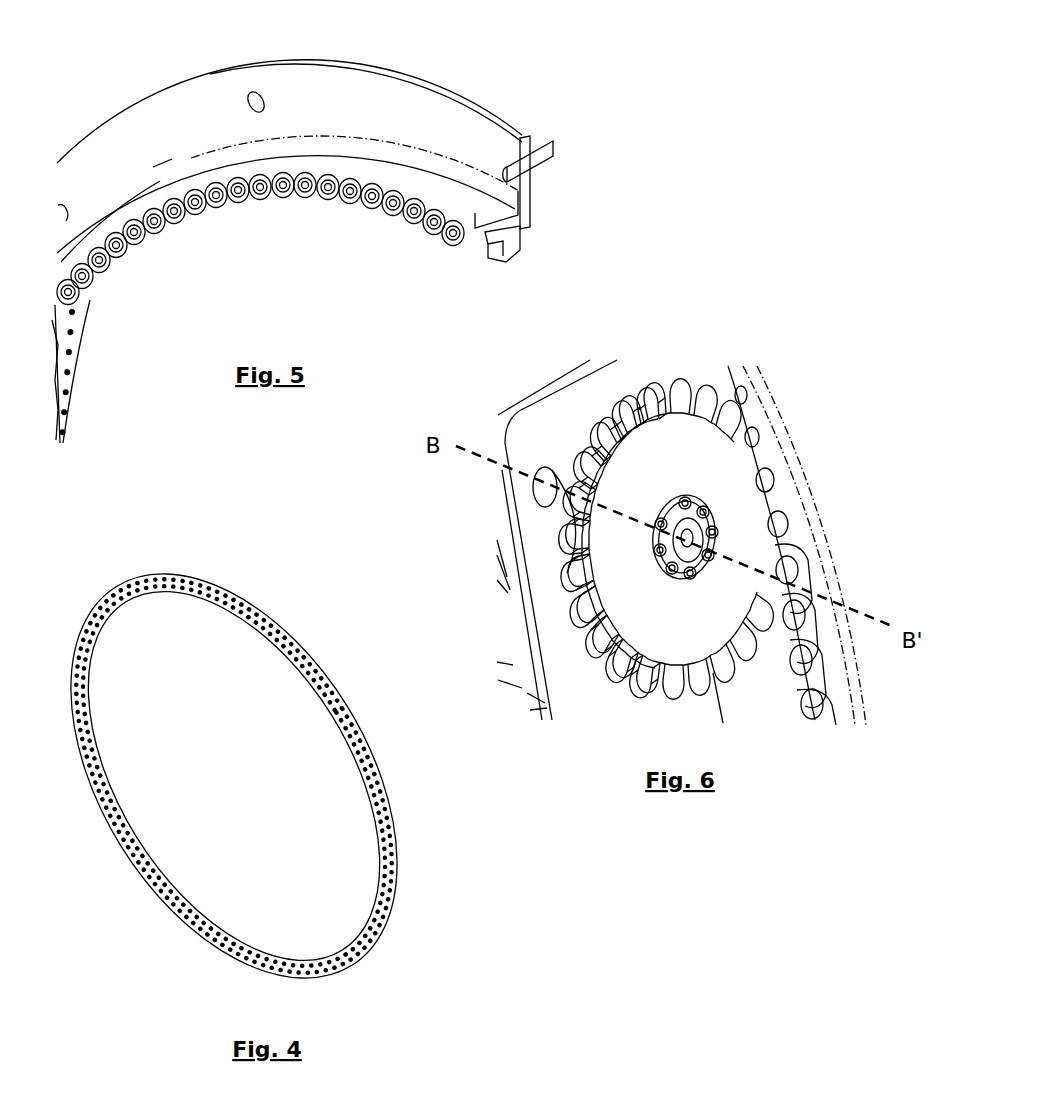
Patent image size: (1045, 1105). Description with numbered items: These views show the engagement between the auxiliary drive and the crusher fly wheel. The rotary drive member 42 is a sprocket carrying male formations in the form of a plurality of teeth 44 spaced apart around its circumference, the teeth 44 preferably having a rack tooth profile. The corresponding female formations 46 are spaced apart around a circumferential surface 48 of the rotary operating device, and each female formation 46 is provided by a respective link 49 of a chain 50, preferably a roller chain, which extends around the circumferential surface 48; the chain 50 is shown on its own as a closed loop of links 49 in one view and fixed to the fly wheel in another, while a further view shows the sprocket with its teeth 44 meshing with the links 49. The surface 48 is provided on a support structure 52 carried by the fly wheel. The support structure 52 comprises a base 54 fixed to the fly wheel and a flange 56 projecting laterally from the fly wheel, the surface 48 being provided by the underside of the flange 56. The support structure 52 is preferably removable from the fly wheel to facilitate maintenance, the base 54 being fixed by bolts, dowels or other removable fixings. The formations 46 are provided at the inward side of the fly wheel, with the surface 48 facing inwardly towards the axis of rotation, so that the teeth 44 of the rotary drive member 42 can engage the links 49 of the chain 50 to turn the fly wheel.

In FIG. 6, the rotary drive member 42 is at (644, 443).
In FIG. 6, the teeth 44 is at (642, 689).
In FIG. 5, the female formations 46 is at (68, 333).
In FIG. 6, the female formations 46 is at (806, 689).
In FIG. 5, the circumferential surface 48 is at (485, 238).
In FIG. 5, the link 49 is at (127, 230).
In FIG. 6, the link 49 is at (757, 428).
In FIG. 4, the link 49 is at (360, 742).
In FIG. 5, the chain 50 is at (238, 212).
In FIG. 6, the chain 50 is at (800, 520).
In FIG. 4, the chain 50 is at (316, 636).
In FIG. 5, the support structure 52 is at (525, 134).
In FIG. 5, the base 54 is at (415, 112).
In FIG. 5, the flange 56 is at (485, 203).